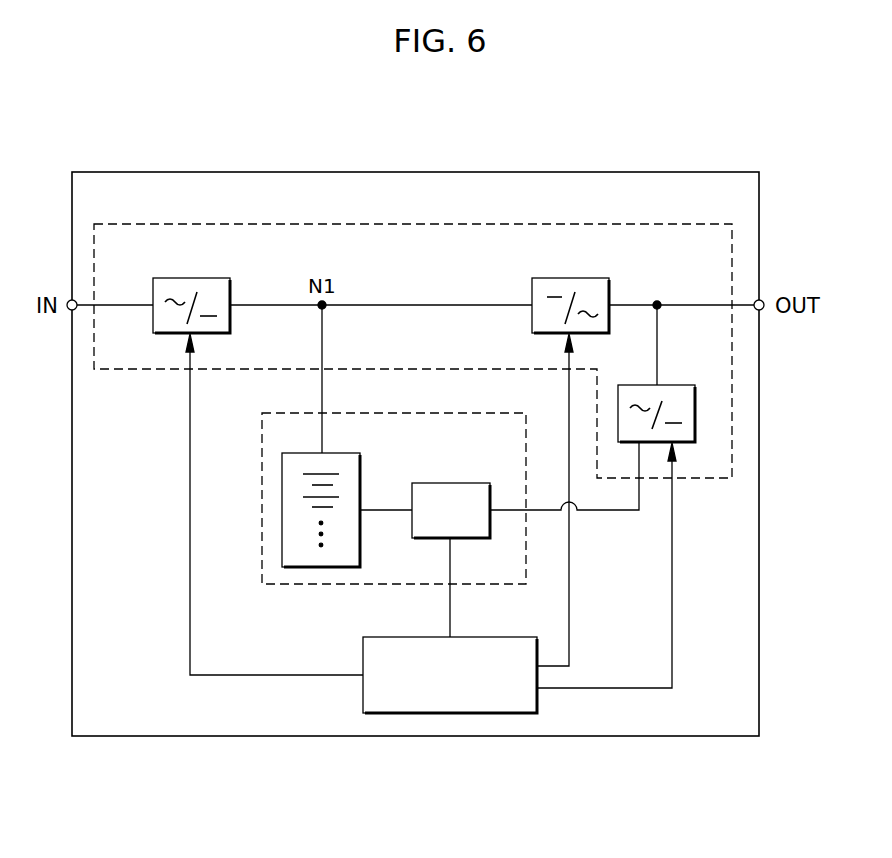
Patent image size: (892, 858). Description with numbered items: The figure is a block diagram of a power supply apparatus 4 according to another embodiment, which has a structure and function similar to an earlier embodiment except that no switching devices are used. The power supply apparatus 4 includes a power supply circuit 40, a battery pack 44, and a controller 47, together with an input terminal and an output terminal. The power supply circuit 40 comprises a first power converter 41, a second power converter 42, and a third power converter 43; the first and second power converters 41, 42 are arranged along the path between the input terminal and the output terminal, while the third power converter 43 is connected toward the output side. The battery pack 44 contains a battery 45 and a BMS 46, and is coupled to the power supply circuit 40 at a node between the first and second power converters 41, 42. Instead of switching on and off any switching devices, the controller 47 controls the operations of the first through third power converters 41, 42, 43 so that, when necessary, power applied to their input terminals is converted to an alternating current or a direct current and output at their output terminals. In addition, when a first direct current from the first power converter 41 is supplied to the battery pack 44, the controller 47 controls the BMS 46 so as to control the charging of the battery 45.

The power supply apparatus 4 is at (628, 143).
The power supply circuit 40 is at (498, 224).
The first power converter 41 is at (193, 278).
The second power converter 42 is at (572, 278).
The third power converter 43 is at (672, 385).
The battery pack 44 is at (450, 413).
The battery 45 is at (340, 453).
The BMS 46 is at (453, 483).
The controller 47 is at (478, 637).